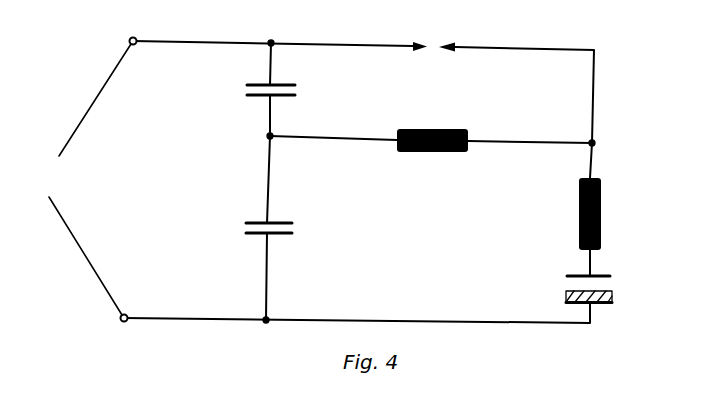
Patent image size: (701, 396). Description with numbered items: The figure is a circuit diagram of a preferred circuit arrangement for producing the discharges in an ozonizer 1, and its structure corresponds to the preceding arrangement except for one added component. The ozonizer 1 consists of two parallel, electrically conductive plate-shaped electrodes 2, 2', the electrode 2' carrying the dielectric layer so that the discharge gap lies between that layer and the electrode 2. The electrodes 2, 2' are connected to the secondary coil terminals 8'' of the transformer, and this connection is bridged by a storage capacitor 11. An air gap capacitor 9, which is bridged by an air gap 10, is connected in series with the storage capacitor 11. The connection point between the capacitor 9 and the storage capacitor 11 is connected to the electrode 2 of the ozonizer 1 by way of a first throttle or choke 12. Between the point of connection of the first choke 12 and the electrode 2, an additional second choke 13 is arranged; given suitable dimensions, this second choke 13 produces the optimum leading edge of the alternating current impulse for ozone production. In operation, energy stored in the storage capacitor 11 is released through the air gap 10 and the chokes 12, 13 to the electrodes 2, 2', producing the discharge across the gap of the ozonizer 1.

The secondary coil terminals 8'' is at (85, 180).
The air gap capacitor 9 is at (245, 89).
The storage capacitor 11 is at (244, 228).
The air gap 10 is at (432, 43).
The first choke 12 is at (421, 152).
The second choke 13 is at (578, 204).
The electrode 2 is at (561, 257).
The ozonizer 1 is at (517, 294).
The electrode 2' is at (600, 327).